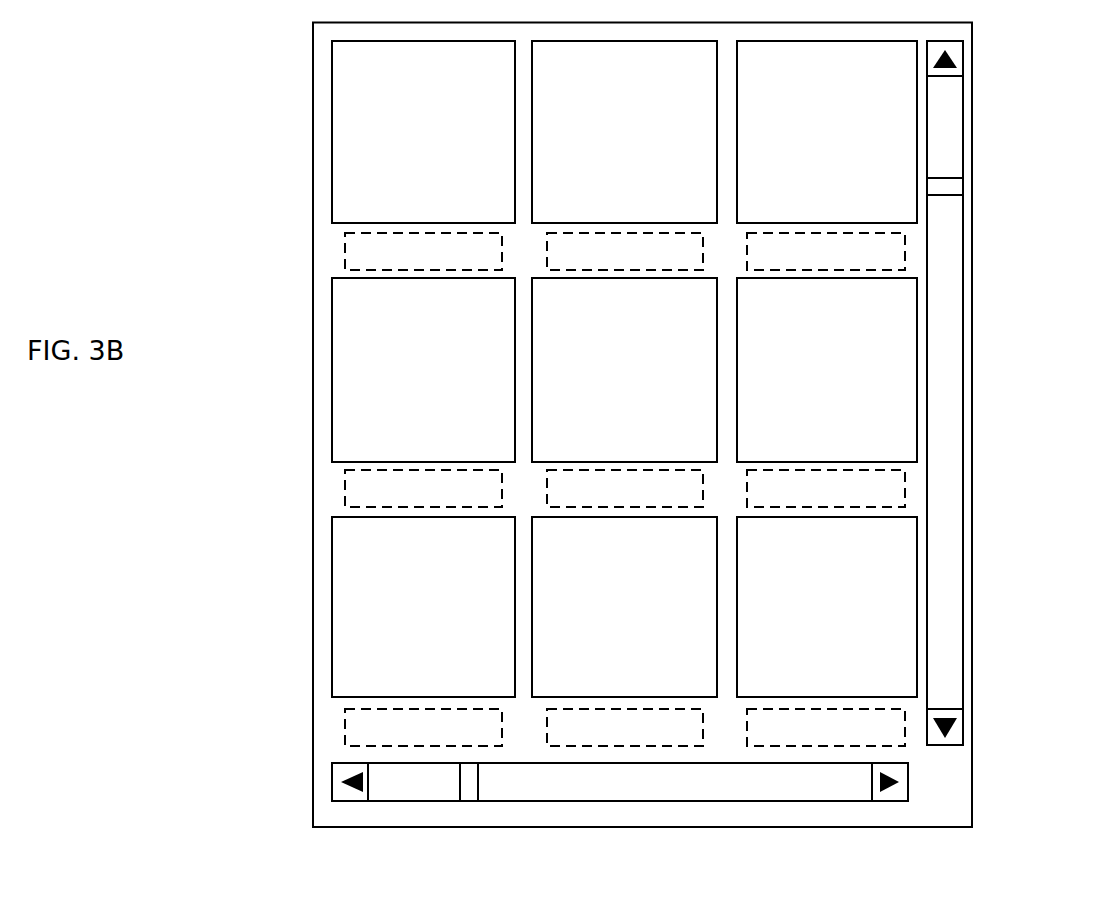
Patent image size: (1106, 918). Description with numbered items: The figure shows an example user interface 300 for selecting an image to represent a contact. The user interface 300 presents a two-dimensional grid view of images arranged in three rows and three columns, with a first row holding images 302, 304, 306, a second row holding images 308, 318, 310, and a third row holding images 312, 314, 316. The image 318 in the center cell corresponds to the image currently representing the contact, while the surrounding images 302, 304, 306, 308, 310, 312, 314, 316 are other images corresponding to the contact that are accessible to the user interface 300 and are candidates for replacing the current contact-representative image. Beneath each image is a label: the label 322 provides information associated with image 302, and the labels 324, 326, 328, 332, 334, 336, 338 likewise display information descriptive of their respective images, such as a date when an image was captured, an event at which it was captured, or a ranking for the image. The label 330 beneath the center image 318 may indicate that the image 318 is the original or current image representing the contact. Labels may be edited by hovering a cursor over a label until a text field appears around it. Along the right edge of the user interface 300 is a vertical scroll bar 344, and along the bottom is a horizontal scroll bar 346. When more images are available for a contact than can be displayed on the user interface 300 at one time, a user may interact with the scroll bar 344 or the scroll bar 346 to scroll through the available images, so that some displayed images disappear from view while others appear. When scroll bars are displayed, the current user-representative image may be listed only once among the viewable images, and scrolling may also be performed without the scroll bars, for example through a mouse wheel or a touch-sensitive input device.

The user interface 300 is at (290, 206).
The image 302 is at (423, 132).
The image 304 is at (624, 132).
The image 306 is at (827, 132).
The image 308 is at (423, 370).
The image 310 is at (827, 370).
The image 312 is at (423, 607).
The image 314 is at (624, 607).
The image 316 is at (827, 607).
The image 318 is at (624, 370).
The label 322 is at (423, 251).
The label 324 is at (625, 251).
The label 326 is at (826, 251).
The label 328 is at (423, 488).
The label 330 is at (625, 488).
The label 332 is at (826, 488).
The label 334 is at (423, 727).
The label 336 is at (625, 727).
The label 338 is at (826, 727).
The vertical scroll bar 344 is at (985, 443).
The horizontal scroll bar 346 is at (416, 816).